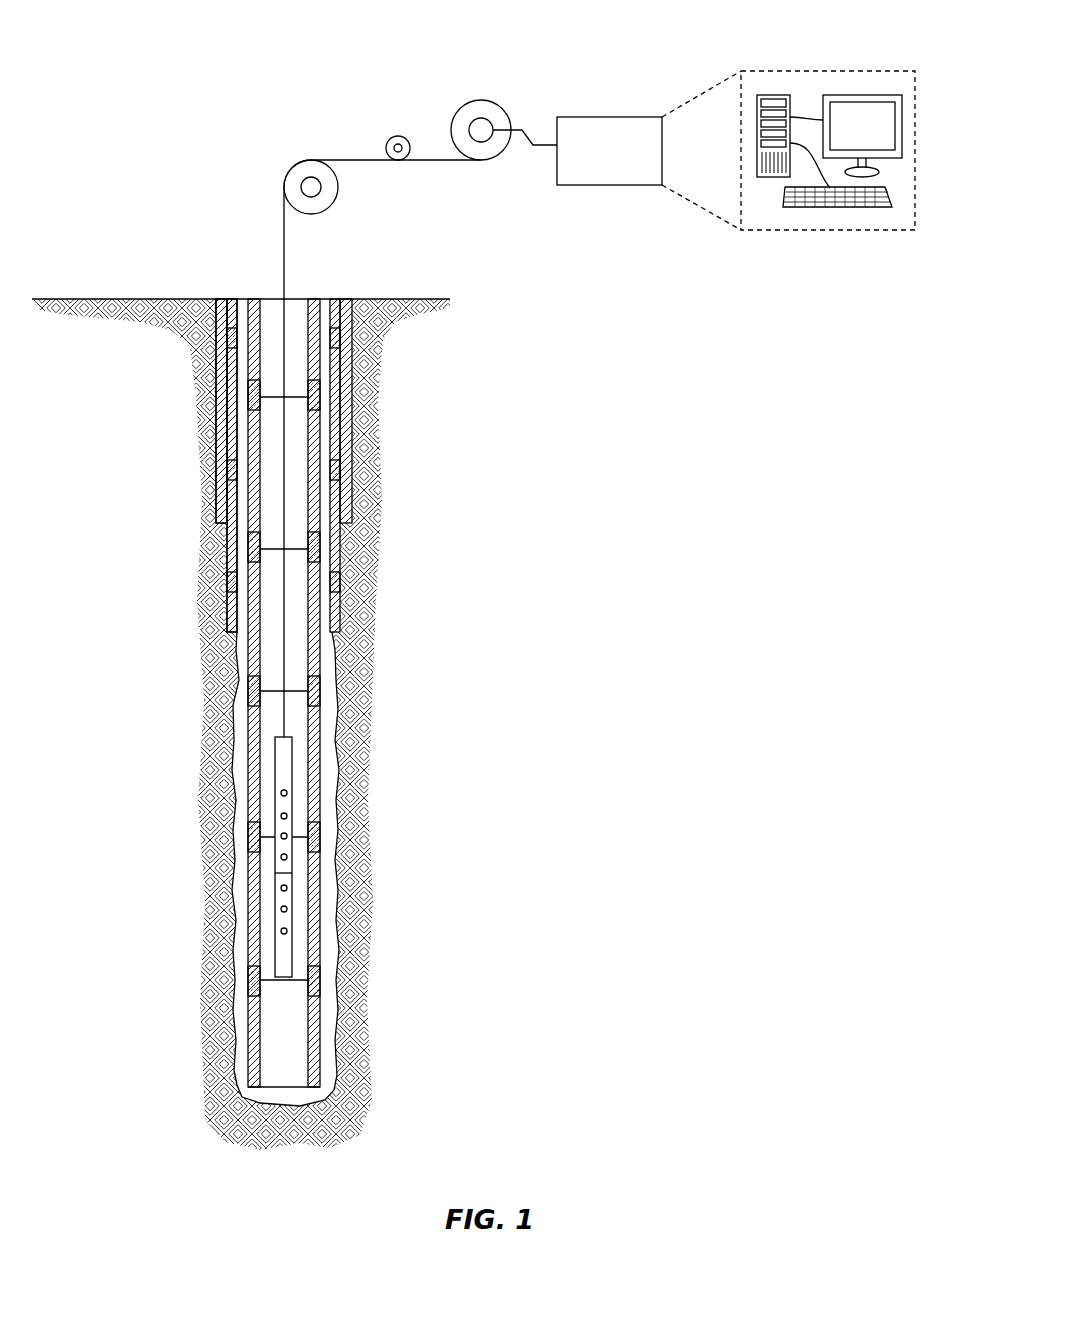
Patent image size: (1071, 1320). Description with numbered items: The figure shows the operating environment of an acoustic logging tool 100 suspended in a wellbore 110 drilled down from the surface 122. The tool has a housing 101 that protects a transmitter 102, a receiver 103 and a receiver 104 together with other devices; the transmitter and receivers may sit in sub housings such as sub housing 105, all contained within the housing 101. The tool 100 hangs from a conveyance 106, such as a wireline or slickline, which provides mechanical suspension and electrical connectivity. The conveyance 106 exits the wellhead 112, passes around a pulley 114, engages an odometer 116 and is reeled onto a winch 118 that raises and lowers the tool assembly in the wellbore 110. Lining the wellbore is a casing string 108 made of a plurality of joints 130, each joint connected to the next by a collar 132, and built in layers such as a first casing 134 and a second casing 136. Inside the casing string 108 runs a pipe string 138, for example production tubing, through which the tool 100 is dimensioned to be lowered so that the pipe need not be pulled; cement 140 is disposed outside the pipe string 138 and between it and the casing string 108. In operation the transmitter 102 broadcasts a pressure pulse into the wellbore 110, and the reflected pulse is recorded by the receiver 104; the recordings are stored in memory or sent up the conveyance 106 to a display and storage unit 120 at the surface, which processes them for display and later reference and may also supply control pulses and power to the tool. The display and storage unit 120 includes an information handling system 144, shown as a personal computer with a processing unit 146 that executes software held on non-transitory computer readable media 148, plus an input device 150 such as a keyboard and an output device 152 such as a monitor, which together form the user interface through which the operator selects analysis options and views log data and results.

The acoustic logging tool 100 is at (268, 862).
The housing 101 is at (275, 800).
The transmitter 102 is at (287, 793).
The receiver 103 is at (292, 848).
The receiver 104 is at (287, 888).
The sub housing 105 is at (275, 937).
The conveyance 106 is at (285, 260).
The casing string 108 is at (208, 512).
The wellbore 110 is at (332, 630).
The wellhead 112 is at (272, 293).
The pulley 114 is at (293, 170).
The odometer 116 is at (400, 135).
The winch 118 is at (500, 103).
The display and storage unit 120 is at (618, 117).
The surface 122 is at (70, 298).
The joint 130 is at (228, 545).
The collar 132 is at (228, 582).
The first casing 134 is at (338, 548).
The second casing 136 is at (345, 503).
The pipe string 138 is at (325, 1042).
The cement 140 is at (333, 737).
The information handling system 144 is at (812, 70).
The processing unit 146 is at (773, 178).
The non-transitory computer readable media 148 is at (775, 95).
The input device 150 is at (833, 207).
The output device 152 is at (862, 95).